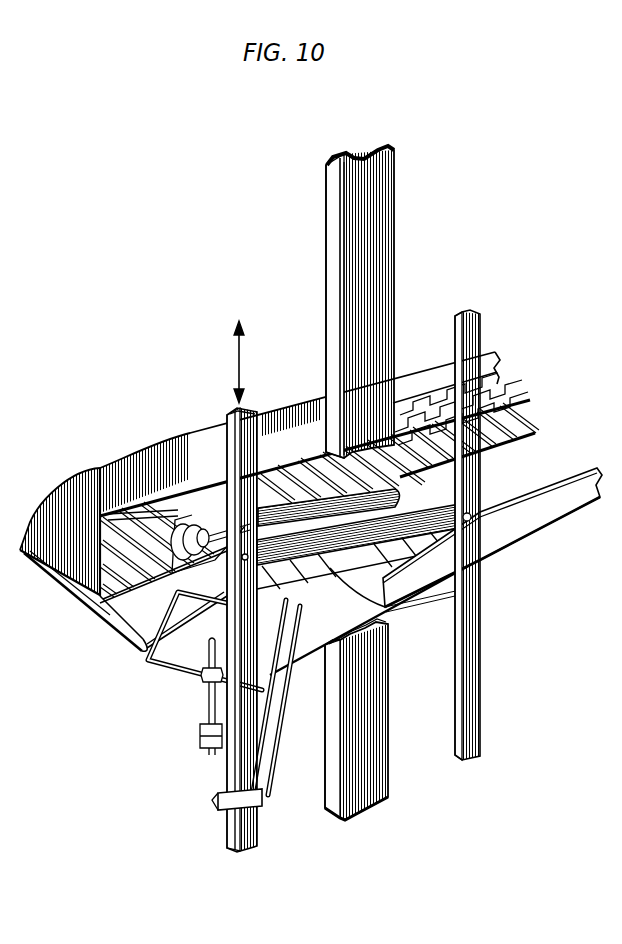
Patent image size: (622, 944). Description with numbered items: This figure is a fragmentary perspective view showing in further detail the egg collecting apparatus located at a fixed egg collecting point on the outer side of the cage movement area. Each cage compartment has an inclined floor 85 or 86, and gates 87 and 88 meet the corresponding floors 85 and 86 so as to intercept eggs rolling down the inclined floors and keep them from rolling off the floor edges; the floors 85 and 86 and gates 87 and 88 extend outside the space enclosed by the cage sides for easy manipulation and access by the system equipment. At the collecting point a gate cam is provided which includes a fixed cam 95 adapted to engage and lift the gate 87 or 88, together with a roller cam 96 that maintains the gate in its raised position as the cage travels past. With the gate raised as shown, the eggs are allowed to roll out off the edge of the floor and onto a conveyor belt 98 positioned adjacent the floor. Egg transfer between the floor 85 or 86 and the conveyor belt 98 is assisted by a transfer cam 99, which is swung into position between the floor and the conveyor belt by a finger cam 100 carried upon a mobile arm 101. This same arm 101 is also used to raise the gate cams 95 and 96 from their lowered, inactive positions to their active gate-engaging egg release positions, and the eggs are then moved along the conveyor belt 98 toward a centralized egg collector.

The inclined floor 85 is at (81, 577).
The inclined floor 86 is at (108, 625).
The gate 87 is at (353, 472).
The gate 88 is at (519, 392).
The fixed cam 95 is at (287, 515).
The roller cam 96 is at (163, 532).
The conveyor belt 98 is at (547, 482).
The transfer cam 99 is at (162, 672).
The finger cam 100 is at (297, 648).
The mobile arm 101 is at (257, 418).